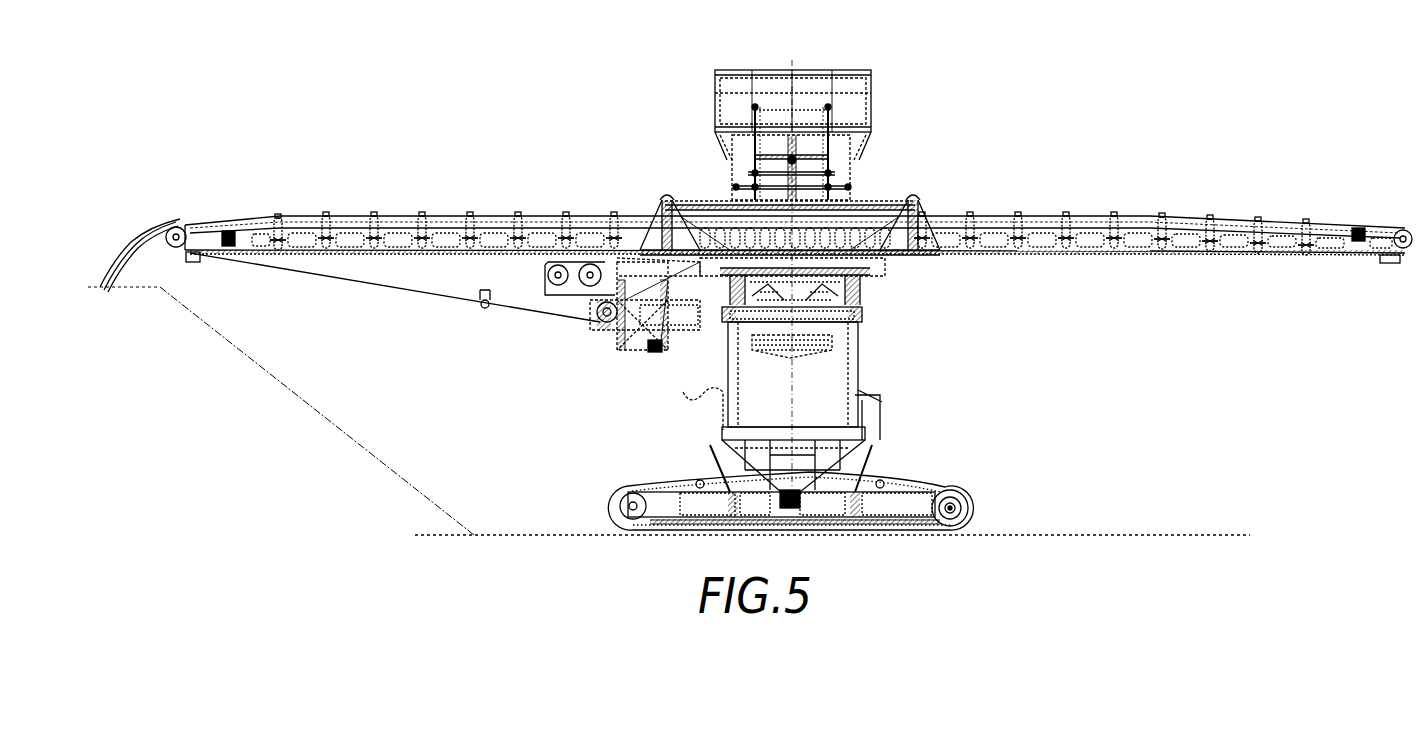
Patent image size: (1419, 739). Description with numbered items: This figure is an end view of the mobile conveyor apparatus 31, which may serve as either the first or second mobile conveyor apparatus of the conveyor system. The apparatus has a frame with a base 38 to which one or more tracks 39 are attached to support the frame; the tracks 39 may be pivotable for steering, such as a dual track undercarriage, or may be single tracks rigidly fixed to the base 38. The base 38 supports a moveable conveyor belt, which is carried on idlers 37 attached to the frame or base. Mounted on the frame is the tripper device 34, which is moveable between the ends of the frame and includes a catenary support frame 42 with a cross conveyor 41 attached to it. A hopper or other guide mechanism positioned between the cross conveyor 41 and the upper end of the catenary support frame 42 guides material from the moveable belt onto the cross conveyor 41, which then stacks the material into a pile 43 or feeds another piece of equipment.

The mobile conveyor apparatus 31 is at (789, 228).
The tripper device 34 is at (1043, 194).
The idlers 37 is at (818, 288).
The base 38 is at (900, 391).
The tracks 39 is at (968, 500).
The cross conveyor 41 is at (505, 218).
The catenary support frame 42 is at (762, 68).
The pile 43 is at (310, 435).